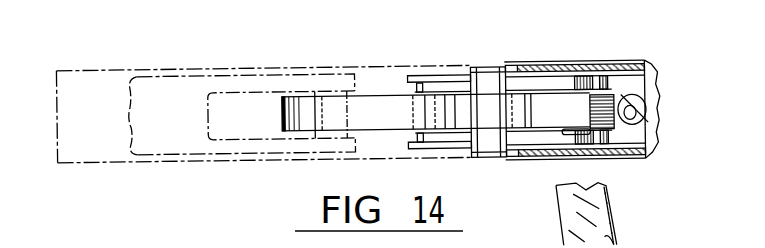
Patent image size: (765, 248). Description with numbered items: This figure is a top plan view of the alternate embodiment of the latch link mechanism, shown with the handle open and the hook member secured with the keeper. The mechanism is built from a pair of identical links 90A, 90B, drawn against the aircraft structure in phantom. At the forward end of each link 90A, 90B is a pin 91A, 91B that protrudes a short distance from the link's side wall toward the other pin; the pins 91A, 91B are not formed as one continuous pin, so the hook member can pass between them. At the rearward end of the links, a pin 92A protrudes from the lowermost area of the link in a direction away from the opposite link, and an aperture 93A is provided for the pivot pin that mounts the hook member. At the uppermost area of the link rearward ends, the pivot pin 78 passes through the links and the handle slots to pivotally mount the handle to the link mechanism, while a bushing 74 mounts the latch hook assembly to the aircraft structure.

The bushing 74 is at (508, 63).
The pivot pin 78 is at (612, 82).
The link 90A is at (458, 152).
The link 90B is at (457, 74).
The pin 91A is at (414, 137).
The pin 91B is at (414, 88).
The pin 92A is at (400, 4).
The aperture 93A is at (346, 4).